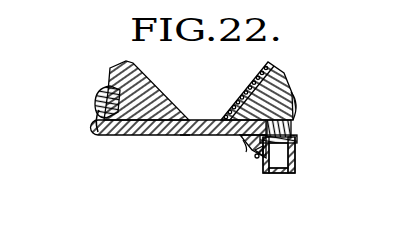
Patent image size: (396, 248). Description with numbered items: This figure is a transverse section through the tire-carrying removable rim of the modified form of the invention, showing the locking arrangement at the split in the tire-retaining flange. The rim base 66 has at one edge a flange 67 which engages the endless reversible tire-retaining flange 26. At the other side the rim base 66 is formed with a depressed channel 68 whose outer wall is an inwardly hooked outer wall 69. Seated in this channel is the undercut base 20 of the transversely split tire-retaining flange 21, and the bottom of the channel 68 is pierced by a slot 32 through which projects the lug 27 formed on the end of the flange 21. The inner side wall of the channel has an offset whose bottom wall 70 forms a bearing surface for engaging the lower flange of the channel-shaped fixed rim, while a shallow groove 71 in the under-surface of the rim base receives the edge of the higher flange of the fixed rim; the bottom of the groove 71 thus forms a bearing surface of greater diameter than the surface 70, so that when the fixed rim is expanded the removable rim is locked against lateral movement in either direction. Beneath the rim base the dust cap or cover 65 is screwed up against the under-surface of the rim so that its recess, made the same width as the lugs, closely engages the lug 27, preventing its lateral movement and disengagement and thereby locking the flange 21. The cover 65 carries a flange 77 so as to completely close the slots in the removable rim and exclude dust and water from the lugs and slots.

The base 20 is at (313, 155).
The transversely split tire-retaining flange 21 is at (282, 97).
The endless reversible tire-retaining flange 26 is at (111, 90).
The lug 27 is at (313, 166).
The slot 32 is at (224, 181).
The dust cap or cover 65 is at (290, 185).
The rim base 66 is at (188, 156).
The flange 67 is at (57, 119).
The depressed channel 68 is at (238, 91).
The inwardly hooked outer wall 69 is at (318, 134).
The bottom wall 70 is at (236, 151).
The shallow groove 71 is at (168, 154).
The flange 77 is at (242, 187).